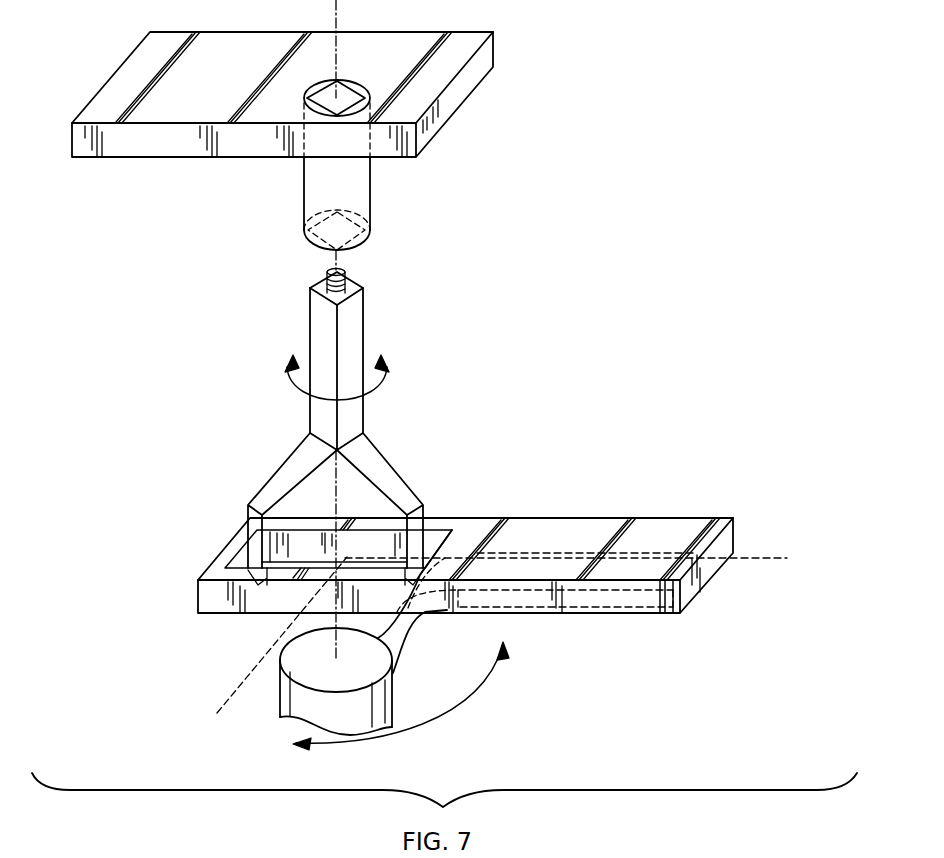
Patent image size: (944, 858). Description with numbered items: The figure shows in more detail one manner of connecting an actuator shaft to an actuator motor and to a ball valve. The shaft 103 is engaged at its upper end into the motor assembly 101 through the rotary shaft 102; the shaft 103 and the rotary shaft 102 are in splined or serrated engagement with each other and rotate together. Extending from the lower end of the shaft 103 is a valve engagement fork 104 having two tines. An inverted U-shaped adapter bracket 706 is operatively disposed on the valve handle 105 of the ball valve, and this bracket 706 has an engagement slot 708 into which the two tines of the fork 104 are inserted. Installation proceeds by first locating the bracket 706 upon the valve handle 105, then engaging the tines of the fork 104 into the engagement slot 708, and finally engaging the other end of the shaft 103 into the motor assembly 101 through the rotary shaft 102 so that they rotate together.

The motor assembly 101 is at (458, 88).
The rotary shaft 102 is at (353, 208).
The shaft 103 is at (350, 333).
The valve engagement fork 104 is at (407, 460).
The valve handle 105 is at (686, 594).
The adapter bracket 706 is at (737, 537).
The engagement slot 708 is at (282, 567).